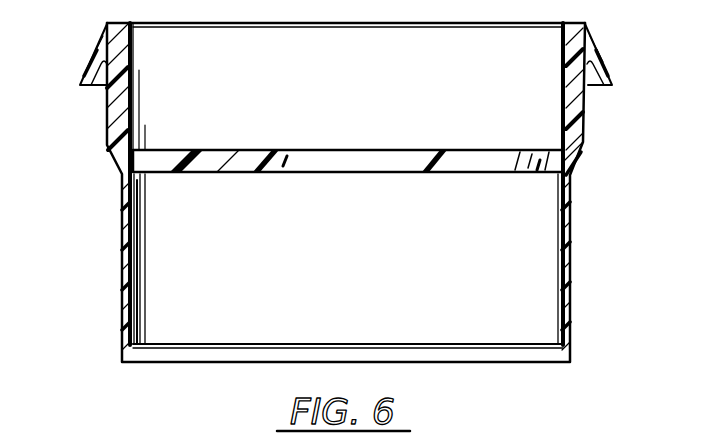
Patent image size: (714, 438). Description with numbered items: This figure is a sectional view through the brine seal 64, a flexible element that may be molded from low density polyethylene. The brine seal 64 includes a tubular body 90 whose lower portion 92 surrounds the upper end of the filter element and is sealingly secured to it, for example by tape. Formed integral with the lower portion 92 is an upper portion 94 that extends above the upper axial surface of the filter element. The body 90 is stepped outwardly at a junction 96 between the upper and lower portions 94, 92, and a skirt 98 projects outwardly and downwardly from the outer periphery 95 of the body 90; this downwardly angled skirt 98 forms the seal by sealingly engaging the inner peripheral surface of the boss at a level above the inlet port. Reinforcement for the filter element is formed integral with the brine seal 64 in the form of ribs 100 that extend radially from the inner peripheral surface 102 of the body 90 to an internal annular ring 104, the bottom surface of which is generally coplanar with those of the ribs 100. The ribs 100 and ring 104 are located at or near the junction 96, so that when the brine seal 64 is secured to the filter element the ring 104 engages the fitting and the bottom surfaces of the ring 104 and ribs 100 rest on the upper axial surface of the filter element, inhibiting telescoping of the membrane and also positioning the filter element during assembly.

The brine seal 64 is at (96, 157).
The tubular body 90 is at (578, 322).
The lower portion 92 is at (572, 254).
The upper portion 94 is at (584, 132).
The outer periphery 95 is at (125, 298).
The junction 96 is at (578, 163).
The skirt 98 is at (93, 72).
The ribs 100 is at (232, 104).
The inner peripheral surface 102 is at (143, 242).
The internal annular ring 104 is at (427, 150).